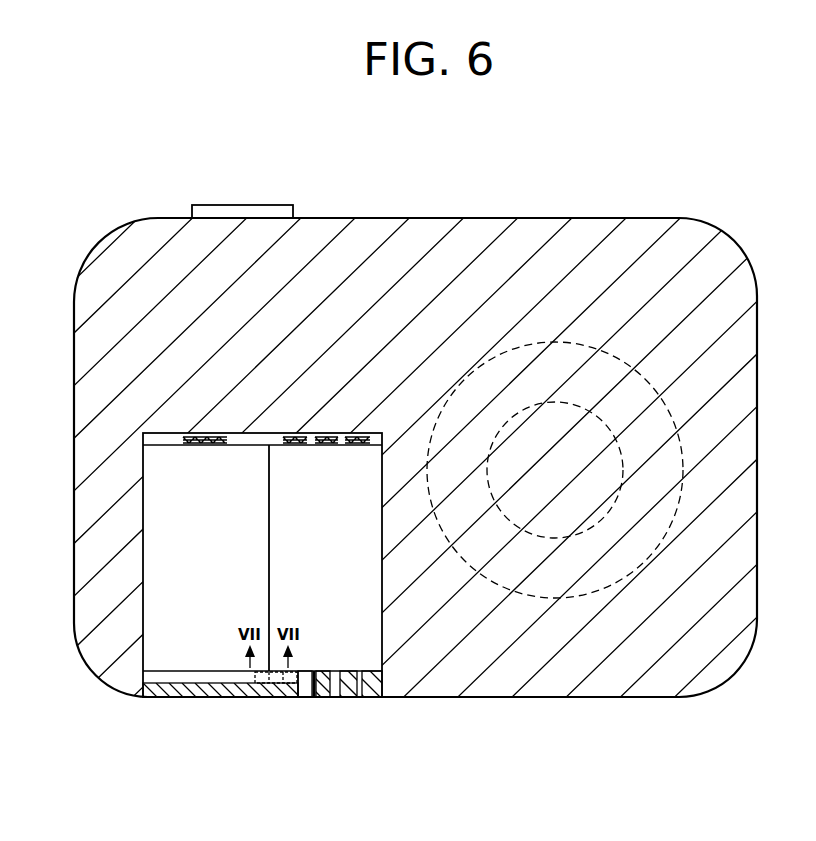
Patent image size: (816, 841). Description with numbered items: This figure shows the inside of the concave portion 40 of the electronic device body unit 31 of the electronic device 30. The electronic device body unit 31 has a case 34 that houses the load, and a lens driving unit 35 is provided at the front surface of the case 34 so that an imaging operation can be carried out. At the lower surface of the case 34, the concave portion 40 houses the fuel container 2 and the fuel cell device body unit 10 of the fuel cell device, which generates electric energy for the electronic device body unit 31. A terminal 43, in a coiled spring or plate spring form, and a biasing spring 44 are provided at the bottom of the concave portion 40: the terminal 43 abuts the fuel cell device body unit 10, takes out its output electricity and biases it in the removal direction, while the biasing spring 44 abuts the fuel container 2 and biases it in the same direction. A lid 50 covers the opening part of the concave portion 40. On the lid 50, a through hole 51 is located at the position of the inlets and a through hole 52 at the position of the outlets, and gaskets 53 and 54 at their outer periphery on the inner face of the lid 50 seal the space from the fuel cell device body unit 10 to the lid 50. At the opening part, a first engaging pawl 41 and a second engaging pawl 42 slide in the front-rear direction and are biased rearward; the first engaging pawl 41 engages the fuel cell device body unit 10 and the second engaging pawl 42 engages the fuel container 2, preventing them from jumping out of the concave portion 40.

The electronic device 30 is at (697, 134).
The electronic device body unit 31 is at (452, 218).
The case 34 is at (242, 211).
The lens driving unit 35 is at (597, 350).
The fuel container 2 is at (143, 553).
The concave portion 40 is at (155, 445).
The fuel cell device body unit 10 is at (185, 655).
The biasing spring 44 is at (210, 447).
The terminal 43 is at (295, 446).
The lid 50 is at (203, 690).
The second engaging pawl 42 is at (258, 693).
The first engaging pawl 41 is at (287, 687).
The through hole 51 is at (302, 697).
The through hole 52 is at (348, 697).
The gasket 53 is at (320, 697).
The gasket 54 is at (363, 697).